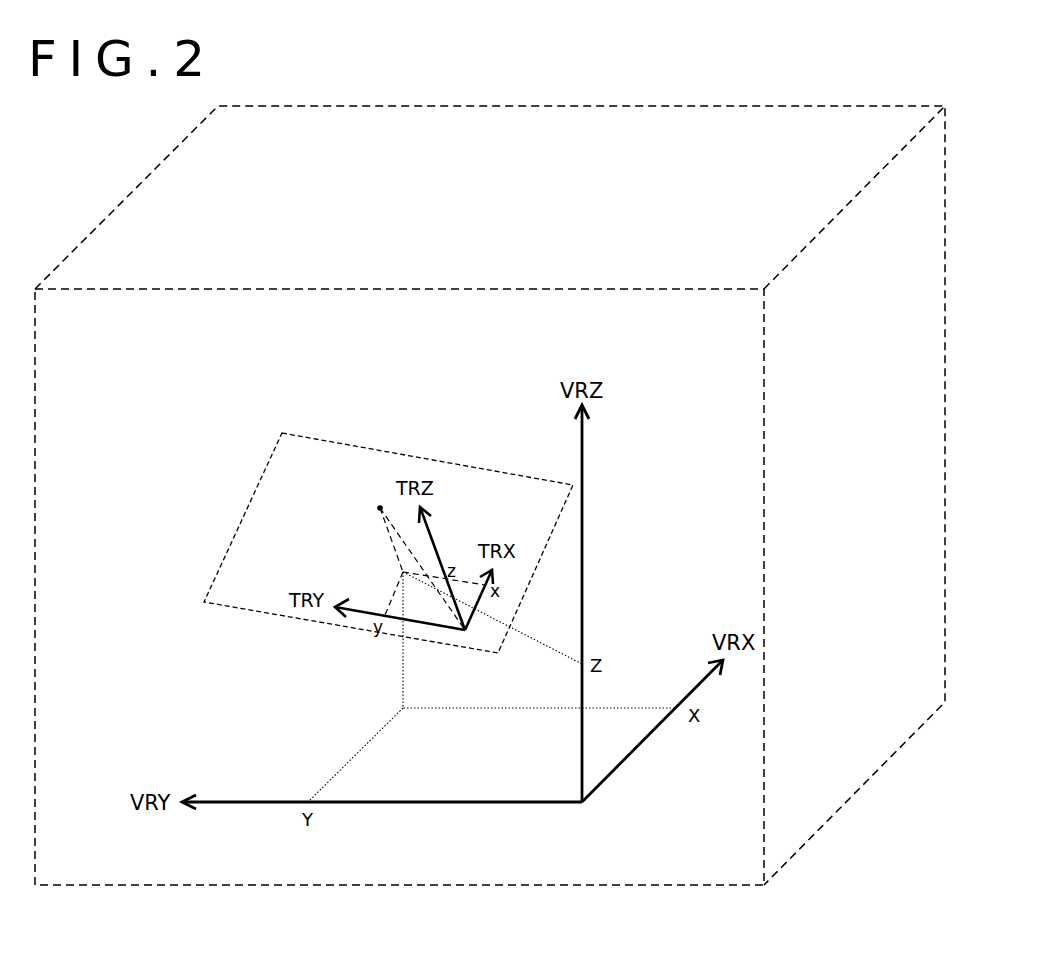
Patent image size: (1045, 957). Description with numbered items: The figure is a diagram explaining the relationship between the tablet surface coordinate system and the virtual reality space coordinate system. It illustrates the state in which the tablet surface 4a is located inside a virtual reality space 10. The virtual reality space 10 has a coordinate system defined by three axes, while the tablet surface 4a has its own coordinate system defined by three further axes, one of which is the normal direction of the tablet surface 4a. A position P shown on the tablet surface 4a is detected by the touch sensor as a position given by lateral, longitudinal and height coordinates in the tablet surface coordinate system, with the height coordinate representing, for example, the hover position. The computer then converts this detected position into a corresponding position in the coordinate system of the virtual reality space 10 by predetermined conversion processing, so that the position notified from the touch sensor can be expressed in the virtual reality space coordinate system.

The tablet surface 4a is at (360, 459).
The virtual reality space 10 is at (705, 885).
The position P is at (372, 508).